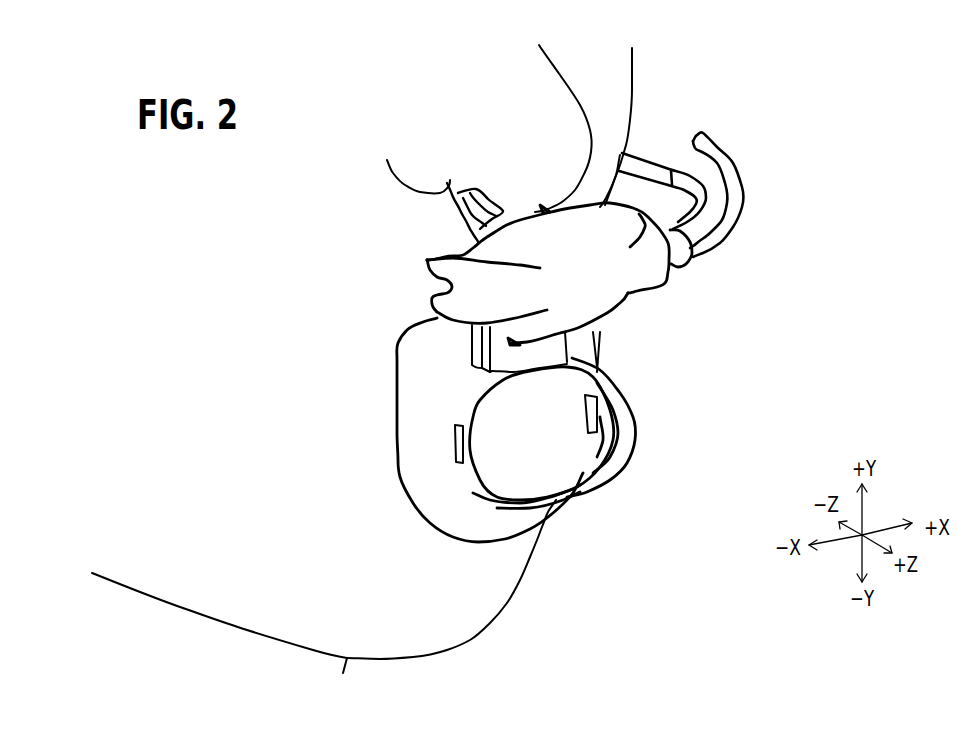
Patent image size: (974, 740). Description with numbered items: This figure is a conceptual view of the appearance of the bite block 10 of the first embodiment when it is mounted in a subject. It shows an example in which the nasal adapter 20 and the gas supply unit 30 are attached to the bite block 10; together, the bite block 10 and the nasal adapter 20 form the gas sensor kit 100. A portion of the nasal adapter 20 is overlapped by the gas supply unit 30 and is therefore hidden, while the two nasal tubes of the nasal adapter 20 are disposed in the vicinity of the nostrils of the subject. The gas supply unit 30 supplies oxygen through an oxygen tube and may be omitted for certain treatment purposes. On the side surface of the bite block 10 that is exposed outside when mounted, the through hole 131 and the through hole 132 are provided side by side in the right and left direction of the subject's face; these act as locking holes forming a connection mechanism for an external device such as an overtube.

The bite block 10 is at (527, 515).
The nasal adapter 20 is at (470, 203).
The gas supply unit 30 is at (620, 303).
The gas sensor kit 100 is at (792, 421).
The through hole 131 is at (455, 448).
The through hole 132 is at (633, 415).